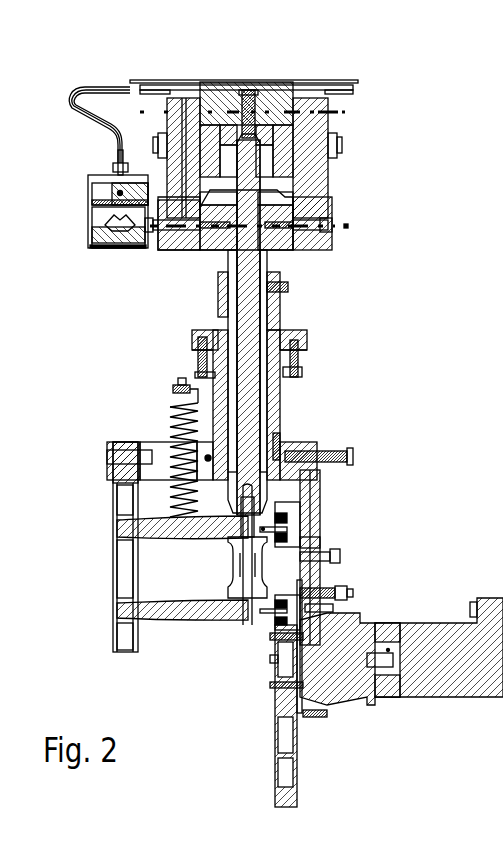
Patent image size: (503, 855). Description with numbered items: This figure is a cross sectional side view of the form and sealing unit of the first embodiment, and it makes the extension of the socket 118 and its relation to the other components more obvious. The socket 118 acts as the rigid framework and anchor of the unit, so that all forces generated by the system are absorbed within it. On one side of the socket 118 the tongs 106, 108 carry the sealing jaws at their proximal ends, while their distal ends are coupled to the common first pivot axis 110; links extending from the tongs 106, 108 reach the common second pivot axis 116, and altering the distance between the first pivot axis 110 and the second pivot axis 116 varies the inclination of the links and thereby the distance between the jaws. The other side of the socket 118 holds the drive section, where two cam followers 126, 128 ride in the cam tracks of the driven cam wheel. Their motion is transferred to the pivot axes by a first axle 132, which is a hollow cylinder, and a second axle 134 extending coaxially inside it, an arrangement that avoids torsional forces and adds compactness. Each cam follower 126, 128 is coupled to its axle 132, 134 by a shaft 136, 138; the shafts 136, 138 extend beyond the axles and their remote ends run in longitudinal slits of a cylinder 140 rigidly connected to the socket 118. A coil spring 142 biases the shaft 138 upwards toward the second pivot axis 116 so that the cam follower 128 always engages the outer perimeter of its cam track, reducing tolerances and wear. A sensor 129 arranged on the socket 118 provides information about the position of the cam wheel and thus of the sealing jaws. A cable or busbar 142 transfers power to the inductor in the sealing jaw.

The tong 108 is at (167, 137).
The coil spring / cable or busbar 142 is at (93, 83).
The tong 106 is at (190, 157).
The second pivot axis 116 is at (337, 113).
The first pivot axis 110 is at (357, 225).
The second axle 134 is at (243, 243).
The socket 118 is at (278, 343).
The cylinder 140 is at (122, 480).
The shaft 138 is at (122, 527).
The shaft 136 is at (157, 613).
The first axle 132 is at (247, 568).
The cam follower 126 is at (278, 622).
The cam follower 128 is at (285, 518).
The sensor 129 is at (332, 592).